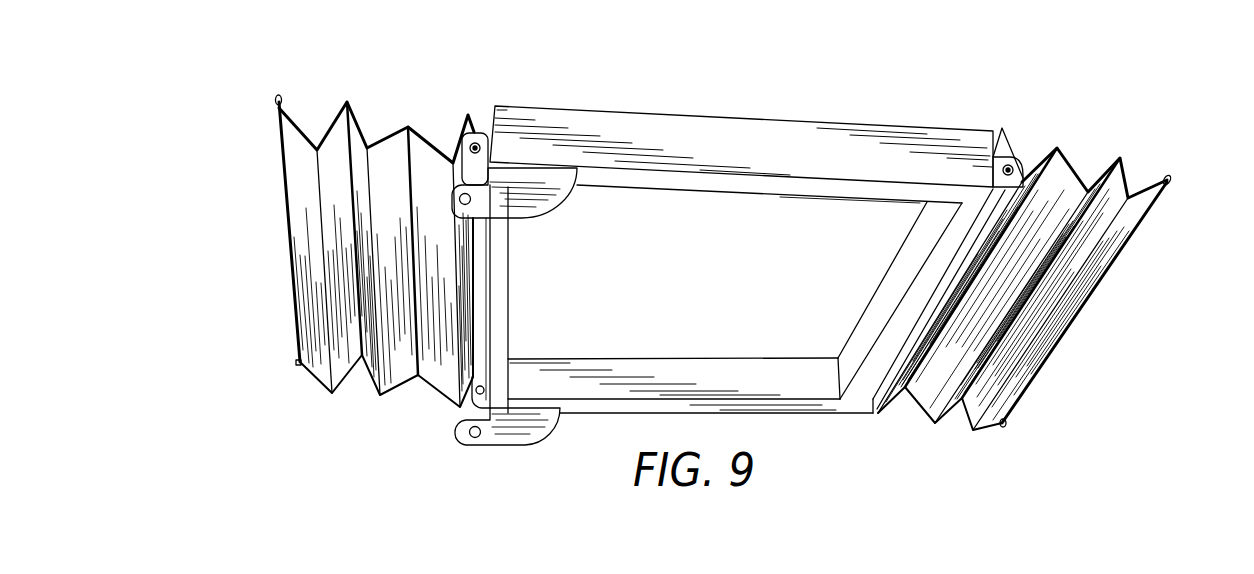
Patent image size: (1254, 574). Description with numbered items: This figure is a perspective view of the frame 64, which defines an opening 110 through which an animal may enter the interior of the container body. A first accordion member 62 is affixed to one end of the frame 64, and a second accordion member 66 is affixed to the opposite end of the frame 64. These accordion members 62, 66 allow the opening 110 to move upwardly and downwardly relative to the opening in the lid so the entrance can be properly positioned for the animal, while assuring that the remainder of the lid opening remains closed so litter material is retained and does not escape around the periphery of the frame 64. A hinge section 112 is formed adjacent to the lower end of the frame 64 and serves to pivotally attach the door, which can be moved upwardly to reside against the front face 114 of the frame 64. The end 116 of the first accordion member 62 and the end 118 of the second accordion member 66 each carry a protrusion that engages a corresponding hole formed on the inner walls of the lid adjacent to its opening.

The first accordion member 62 is at (1072, 310).
The frame 64 is at (795, 130).
The second accordion member 66 is at (323, 367).
The opening 110 is at (708, 282).
The hinge section 112 is at (512, 207).
The front face 114 is at (900, 192).
The end of the first accordion member 116 is at (1170, 180).
The end of the second accordion member 118 is at (277, 96).